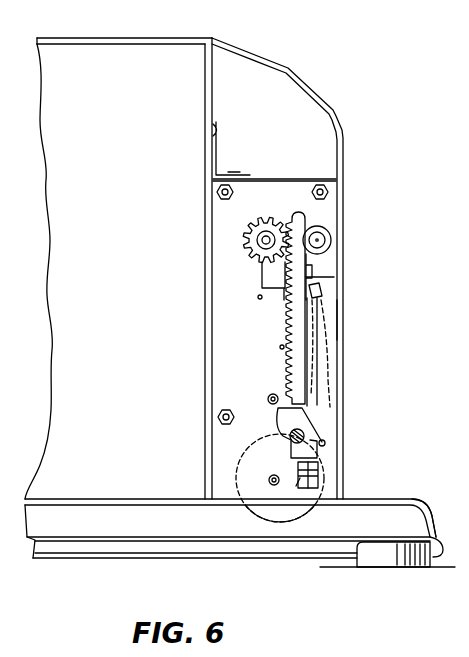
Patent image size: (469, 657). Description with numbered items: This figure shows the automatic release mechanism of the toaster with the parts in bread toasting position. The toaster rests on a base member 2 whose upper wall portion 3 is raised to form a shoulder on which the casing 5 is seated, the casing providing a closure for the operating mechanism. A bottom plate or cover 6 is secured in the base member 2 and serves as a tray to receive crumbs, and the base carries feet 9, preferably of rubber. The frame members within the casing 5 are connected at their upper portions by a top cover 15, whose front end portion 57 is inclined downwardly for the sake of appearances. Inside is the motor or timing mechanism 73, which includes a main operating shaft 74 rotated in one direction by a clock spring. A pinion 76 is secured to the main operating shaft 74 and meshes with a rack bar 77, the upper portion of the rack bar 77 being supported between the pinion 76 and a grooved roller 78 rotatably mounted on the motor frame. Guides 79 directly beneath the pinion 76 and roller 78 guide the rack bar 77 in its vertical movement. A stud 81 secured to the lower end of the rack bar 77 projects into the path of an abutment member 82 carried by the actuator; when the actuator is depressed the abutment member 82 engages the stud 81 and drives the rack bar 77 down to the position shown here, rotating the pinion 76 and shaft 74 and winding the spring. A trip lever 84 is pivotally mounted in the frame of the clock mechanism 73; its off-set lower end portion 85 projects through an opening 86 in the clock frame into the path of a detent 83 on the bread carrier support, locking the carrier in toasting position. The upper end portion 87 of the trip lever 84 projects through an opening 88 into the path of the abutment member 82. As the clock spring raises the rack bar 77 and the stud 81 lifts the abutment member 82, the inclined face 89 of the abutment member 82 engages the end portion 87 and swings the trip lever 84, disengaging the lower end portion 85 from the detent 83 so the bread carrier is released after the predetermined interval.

The base member 2 is at (421, 514).
The upper wall portion 3 is at (113, 499).
The casing 5 is at (344, 321).
The bottom plate or cover 6 is at (166, 539).
The feet 9 is at (377, 560).
The top cover 15 is at (121, 38).
The front end portion of the top cover 57 is at (286, 73).
The motor or timing mechanism 73 is at (270, 174).
The main operating shaft 74 is at (268, 236).
The pinion 76 is at (251, 258).
The rack bar 77 is at (290, 319).
The grooved roller 78 is at (331, 236).
The guides 79 is at (310, 277).
The stud 81 is at (287, 438).
The abutment member 82 is at (314, 426).
The detent 83 is at (322, 490).
The trip lever 84 is at (336, 361).
The lower end portion of the trip lever 85 is at (320, 487).
The opening in the clock frame 86 is at (296, 480).
The upper end portion of the trip lever 87 is at (322, 293).
The opening in the clock frame 88 is at (322, 266).
The inclined face 89 is at (320, 413).